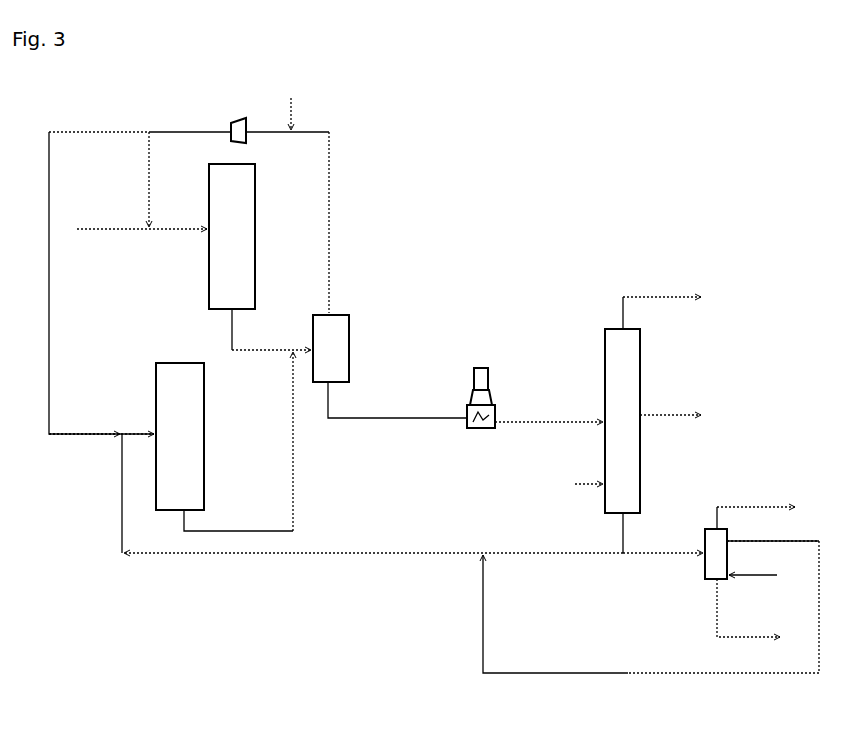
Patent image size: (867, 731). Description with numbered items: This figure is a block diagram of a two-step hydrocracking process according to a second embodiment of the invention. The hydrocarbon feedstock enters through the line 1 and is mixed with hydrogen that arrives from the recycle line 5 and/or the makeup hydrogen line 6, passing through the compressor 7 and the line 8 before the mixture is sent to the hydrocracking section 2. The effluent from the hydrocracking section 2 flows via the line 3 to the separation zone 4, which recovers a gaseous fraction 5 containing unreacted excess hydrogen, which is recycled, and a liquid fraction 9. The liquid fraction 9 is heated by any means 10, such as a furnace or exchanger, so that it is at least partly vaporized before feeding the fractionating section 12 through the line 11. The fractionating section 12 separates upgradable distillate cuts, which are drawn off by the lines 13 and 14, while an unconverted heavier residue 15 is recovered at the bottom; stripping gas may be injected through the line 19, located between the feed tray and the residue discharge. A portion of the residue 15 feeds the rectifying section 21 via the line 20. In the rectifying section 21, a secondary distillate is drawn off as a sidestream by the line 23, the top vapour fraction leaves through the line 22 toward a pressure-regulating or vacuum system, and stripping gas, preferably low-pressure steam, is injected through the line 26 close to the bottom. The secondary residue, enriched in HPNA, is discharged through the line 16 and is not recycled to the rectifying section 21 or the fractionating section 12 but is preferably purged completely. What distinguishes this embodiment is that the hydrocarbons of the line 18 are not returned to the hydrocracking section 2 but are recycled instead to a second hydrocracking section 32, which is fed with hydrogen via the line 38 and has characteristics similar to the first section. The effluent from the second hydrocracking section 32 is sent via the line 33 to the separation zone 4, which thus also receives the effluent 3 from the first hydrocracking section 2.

The line 1 is at (98, 228).
The hydrocracking section 2 is at (256, 238).
The line 3 is at (247, 352).
The separation zone 4 is at (350, 340).
The recycle line 5 is at (330, 227).
The makeup hydrogen line 6 is at (286, 109).
The compressor 7 is at (231, 120).
The line 8 is at (147, 174).
The liquid fraction 9 is at (418, 412).
The heating means 10 is at (470, 392).
The line 11 is at (540, 422).
The fractionating section 12 is at (605, 366).
The line 13 is at (657, 296).
The line 14 is at (676, 414).
The residue 15 is at (618, 542).
The line 16 is at (741, 640).
The line 18 is at (172, 556).
The line 19 is at (586, 483).
The line 20 is at (655, 556).
The rectifying section 21 is at (704, 534).
The line 22 is at (752, 502).
The line 23 is at (555, 672).
The line 26 is at (762, 574).
The second hydrocracking section 32 is at (205, 440).
The line 33 is at (294, 480).
The line 38 is at (50, 314).